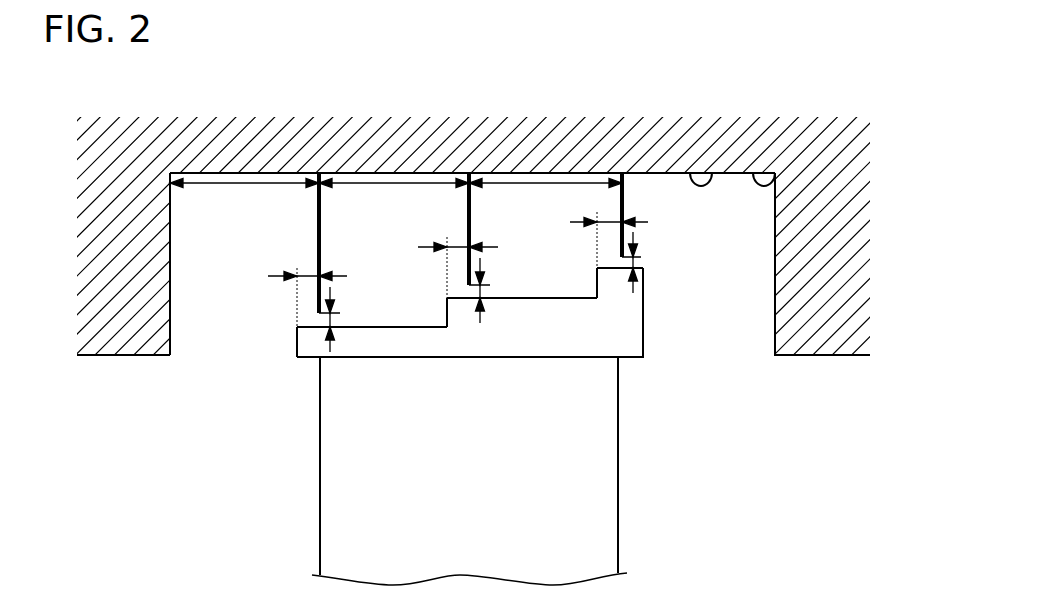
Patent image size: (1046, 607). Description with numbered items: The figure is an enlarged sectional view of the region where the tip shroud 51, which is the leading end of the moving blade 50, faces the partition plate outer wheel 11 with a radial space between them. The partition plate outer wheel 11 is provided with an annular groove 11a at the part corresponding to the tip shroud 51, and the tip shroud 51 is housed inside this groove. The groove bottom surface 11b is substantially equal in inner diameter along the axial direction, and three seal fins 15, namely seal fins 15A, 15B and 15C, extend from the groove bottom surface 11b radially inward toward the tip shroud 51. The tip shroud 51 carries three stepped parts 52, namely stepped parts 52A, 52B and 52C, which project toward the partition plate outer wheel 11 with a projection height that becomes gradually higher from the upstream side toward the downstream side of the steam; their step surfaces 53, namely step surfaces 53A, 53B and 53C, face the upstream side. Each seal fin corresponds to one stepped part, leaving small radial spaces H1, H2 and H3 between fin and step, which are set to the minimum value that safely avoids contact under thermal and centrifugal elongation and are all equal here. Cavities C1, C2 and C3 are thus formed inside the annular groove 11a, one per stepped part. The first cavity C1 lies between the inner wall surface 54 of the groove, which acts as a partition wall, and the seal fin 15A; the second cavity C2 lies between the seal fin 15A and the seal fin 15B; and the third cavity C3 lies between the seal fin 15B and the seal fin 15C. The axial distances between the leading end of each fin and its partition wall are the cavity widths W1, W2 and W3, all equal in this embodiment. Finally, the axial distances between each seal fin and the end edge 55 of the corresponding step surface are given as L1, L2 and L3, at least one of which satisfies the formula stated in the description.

The partition plate outer wheel 11 is at (843, 333).
The annular groove 11a is at (755, 178).
The groove bottom surface 11b is at (715, 178).
The seal fin 15 is at (514, 173).
The first seal fin 15A is at (323, 207).
The second seal fin 15B is at (472, 208).
The third seal fin 15C is at (627, 197).
The first cavity C1 is at (193, 228).
The second cavity C2 is at (437, 216).
The third cavity C3 is at (591, 200).
The cavity width of first cavity W1 is at (244, 198).
The cavity width of second cavity W2 is at (394, 199).
The cavity width of third cavity W3 is at (545, 199).
The distance between first seal fin and step edge L1 is at (309, 273).
The distance between second seal fin and step edge L2 is at (459, 243).
The distance between third seal fin and step edge L3 is at (610, 231).
The small space at first stepped part H1 is at (342, 324).
The small space at second stepped part H2 is at (488, 294).
The small space at third stepped part H3 is at (641, 262).
The moving blade 50 is at (634, 505).
The tip shroud 51 is at (624, 342).
The stepped part 52 is at (515, 359).
The first stepped part 52A is at (360, 322).
The second stepped part 52B is at (500, 295).
The third stepped part 52C is at (648, 260).
The step surface 53 is at (423, 365).
The first step surface 53A is at (297, 341).
The second step surface 53B is at (440, 328).
The third step surface 53C is at (582, 300).
The inner wall surface 54 is at (171, 281).
The end edge 55 is at (298, 326).